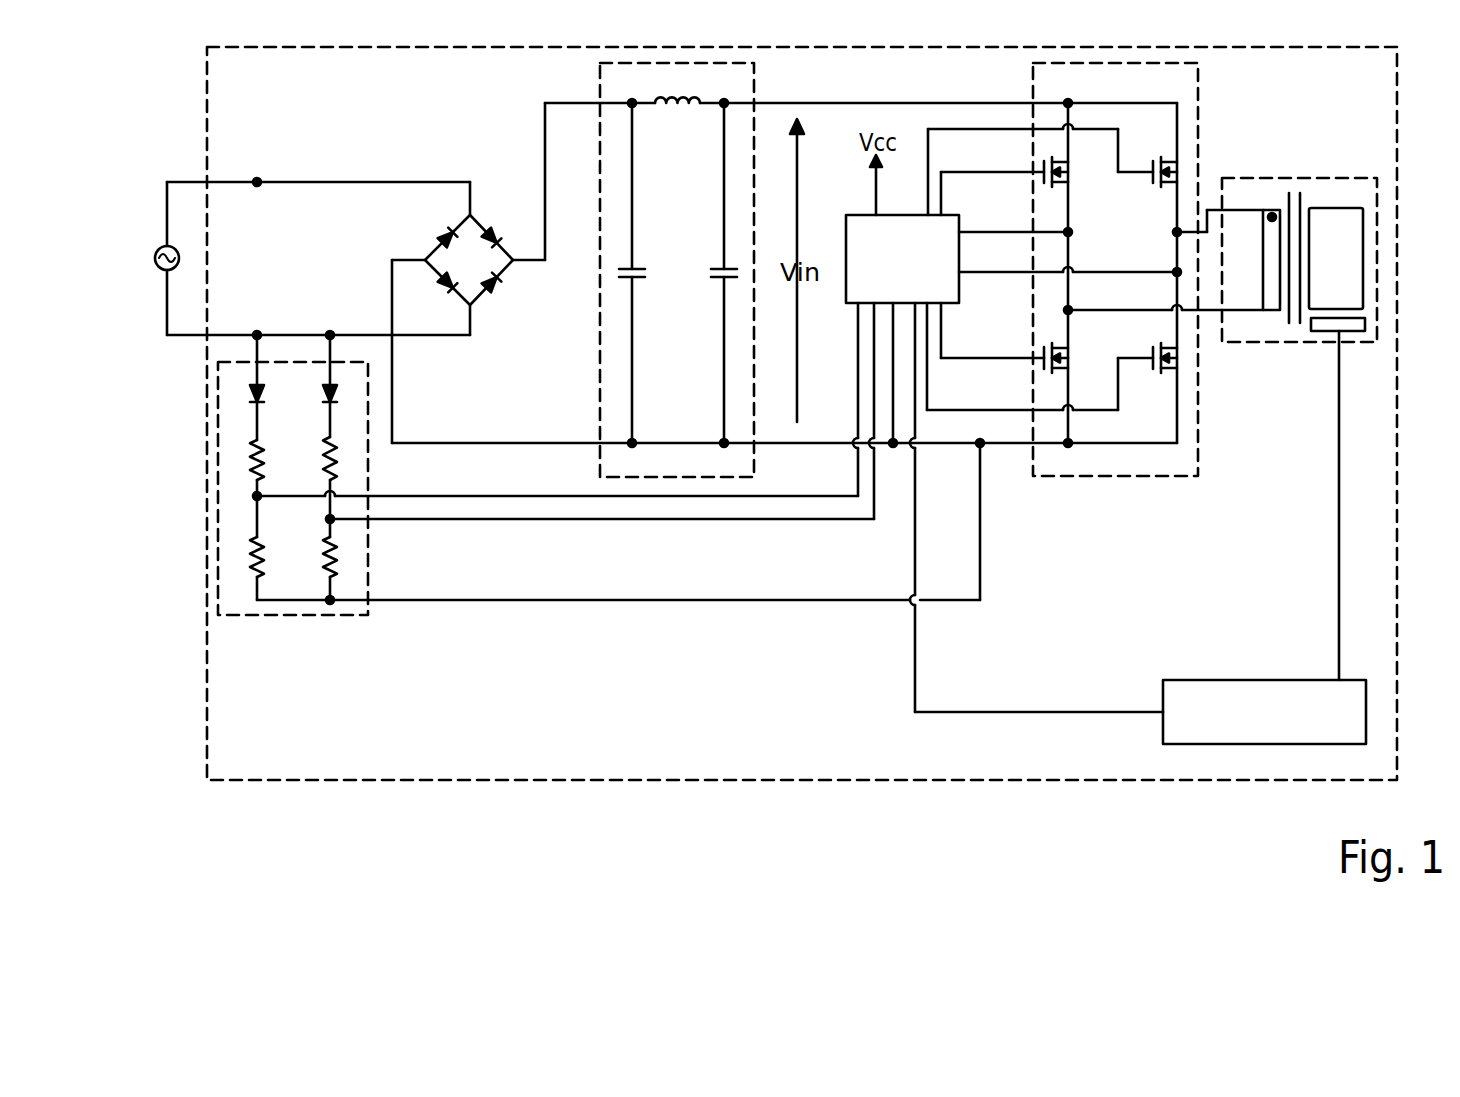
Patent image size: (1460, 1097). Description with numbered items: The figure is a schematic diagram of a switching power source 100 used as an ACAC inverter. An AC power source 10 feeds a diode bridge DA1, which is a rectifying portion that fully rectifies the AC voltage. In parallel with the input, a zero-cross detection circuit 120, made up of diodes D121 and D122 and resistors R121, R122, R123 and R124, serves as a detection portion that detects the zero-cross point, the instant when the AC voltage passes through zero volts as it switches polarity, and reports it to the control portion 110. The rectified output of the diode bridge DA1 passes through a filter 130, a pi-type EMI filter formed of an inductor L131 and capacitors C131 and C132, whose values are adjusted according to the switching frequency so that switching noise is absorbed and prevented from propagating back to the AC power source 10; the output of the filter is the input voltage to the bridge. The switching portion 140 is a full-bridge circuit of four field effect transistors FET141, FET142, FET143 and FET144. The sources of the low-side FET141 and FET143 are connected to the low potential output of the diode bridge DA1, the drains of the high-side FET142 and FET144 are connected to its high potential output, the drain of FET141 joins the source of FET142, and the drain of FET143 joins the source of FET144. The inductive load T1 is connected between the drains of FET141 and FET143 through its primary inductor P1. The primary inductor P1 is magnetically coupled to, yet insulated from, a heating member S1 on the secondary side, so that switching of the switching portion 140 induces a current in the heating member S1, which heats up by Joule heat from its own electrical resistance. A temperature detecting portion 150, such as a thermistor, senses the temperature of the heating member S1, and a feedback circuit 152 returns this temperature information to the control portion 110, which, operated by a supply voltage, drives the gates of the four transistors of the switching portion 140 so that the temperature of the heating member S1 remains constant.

The AC power source 10 is at (153, 235).
The switching power source 100 is at (802, 433).
The control portion 110 is at (902, 259).
The zero-cross detection circuit 120 is at (563, 426).
The filter 130 is at (677, 270).
The switching portion 140 is at (1131, 287).
The temperature detecting portion 150 is at (1366, 325).
The feedback circuit 152 is at (1264, 712).
The diode bridge DA1 is at (496, 213).
The diode D121 is at (268, 372).
The diode D122 is at (340, 373).
The resistor R121 is at (242, 456).
The resistor R122 is at (242, 556).
The resistor R123 is at (348, 456).
The resistor R124 is at (348, 556).
The inductor L131 is at (677, 112).
The capacitor C131 is at (652, 272).
The capacitor C132 is at (710, 282).
The field effect transistor FET141 is at (1050, 341).
The field effect transistor FET142 is at (1075, 185).
The field effect transistor FET143 is at (1185, 372).
The field effect transistor FET144 is at (1185, 165).
The inductive load T1 is at (1277, 248).
The primary inductor P1 is at (1254, 260).
The heating member S1 is at (1336, 258).